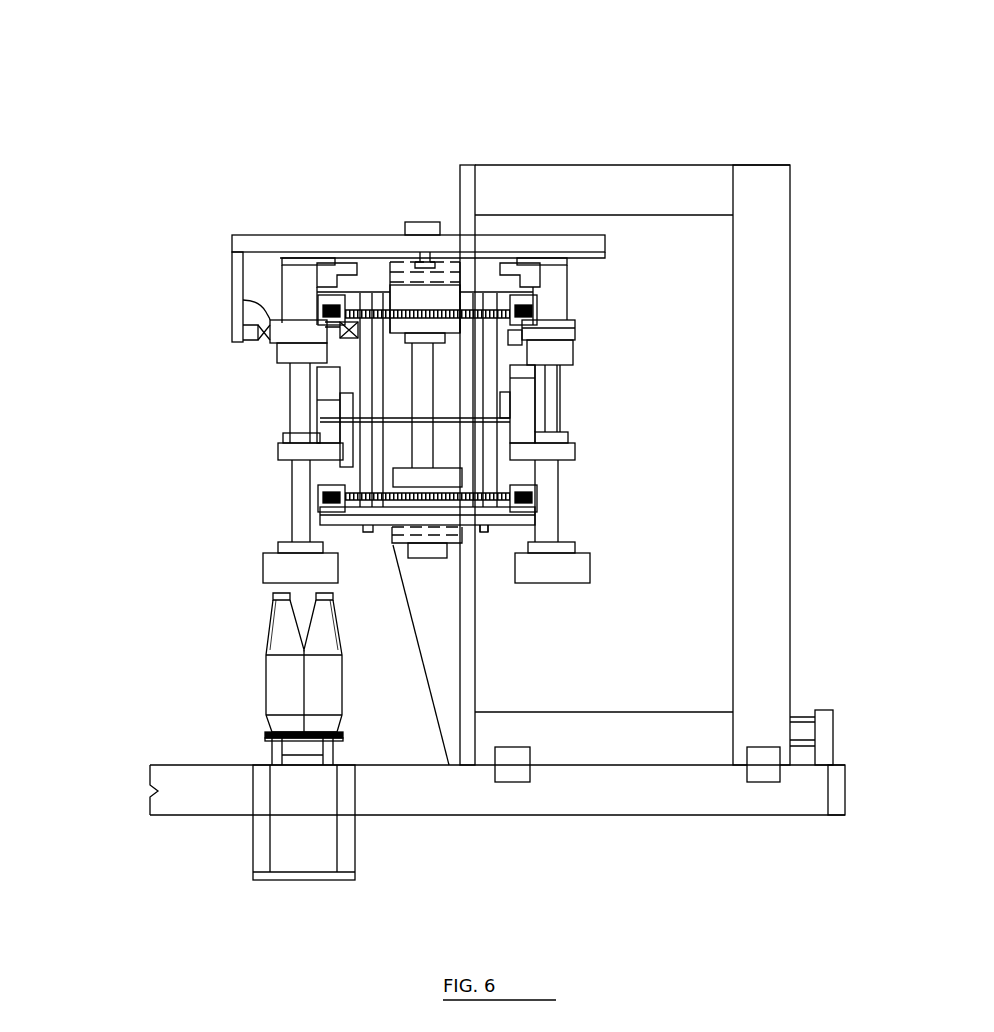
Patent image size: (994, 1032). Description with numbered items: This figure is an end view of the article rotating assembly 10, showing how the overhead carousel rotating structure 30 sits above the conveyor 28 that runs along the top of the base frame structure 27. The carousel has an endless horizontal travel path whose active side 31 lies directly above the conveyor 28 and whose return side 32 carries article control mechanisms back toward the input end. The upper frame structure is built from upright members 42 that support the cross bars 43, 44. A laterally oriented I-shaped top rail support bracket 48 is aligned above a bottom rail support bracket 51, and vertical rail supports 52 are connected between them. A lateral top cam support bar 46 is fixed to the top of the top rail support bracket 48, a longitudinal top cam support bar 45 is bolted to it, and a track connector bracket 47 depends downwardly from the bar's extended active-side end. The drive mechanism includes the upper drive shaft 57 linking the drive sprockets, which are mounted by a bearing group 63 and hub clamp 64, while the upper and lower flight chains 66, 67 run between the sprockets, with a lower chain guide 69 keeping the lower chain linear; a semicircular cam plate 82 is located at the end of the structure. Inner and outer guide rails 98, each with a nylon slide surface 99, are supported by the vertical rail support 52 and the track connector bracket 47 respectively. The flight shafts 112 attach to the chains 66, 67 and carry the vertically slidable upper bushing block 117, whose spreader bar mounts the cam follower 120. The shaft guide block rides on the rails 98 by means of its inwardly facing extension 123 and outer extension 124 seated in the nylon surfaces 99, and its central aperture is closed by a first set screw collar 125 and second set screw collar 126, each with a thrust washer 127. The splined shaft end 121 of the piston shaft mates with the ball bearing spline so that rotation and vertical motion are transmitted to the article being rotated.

The article rotating assembly 10 is at (237, 133).
The base frame structure 27 is at (180, 808).
The conveyor 28 is at (258, 750).
The carousel rotating structure 30 is at (150, 380).
The active side 31 is at (337, 172).
The return side 32 is at (565, 122).
The upright members 42 is at (782, 528).
The cross bar 43 is at (470, 158).
The cross bar 44 is at (650, 178).
The longitudinal top cam support bar 45 is at (425, 222).
The lateral top cam support bar 46 is at (268, 237).
The track connector bracket 47 is at (238, 277).
The top rail support bracket 48 is at (386, 286).
The bottom rail support bracket 51 is at (343, 520).
The vertical rail support 52 is at (483, 532).
The upper drive shaft 57 is at (426, 405).
The bearing group 63 is at (432, 558).
The hub clamp 64 is at (448, 480).
The flight chain 66 is at (545, 298).
The flight chain 67 is at (323, 493).
The lower chain guide 69 is at (323, 507).
The semicircular cam plate 82 is at (400, 418).
The guide rail 98 is at (262, 347).
The nylon slide surface 99 is at (267, 328).
The flight shaft 112 is at (323, 477).
The upper bushing block 117 is at (323, 377).
The cam follower 120 is at (320, 440).
The splined shaft end 121 is at (282, 368).
The inwardly facing extension 123 is at (548, 312).
The outer extension 124 is at (568, 342).
The first set screw collar 125 is at (575, 372).
The second set screw collar 126 is at (560, 325).
The thrust washer 127 is at (565, 335).